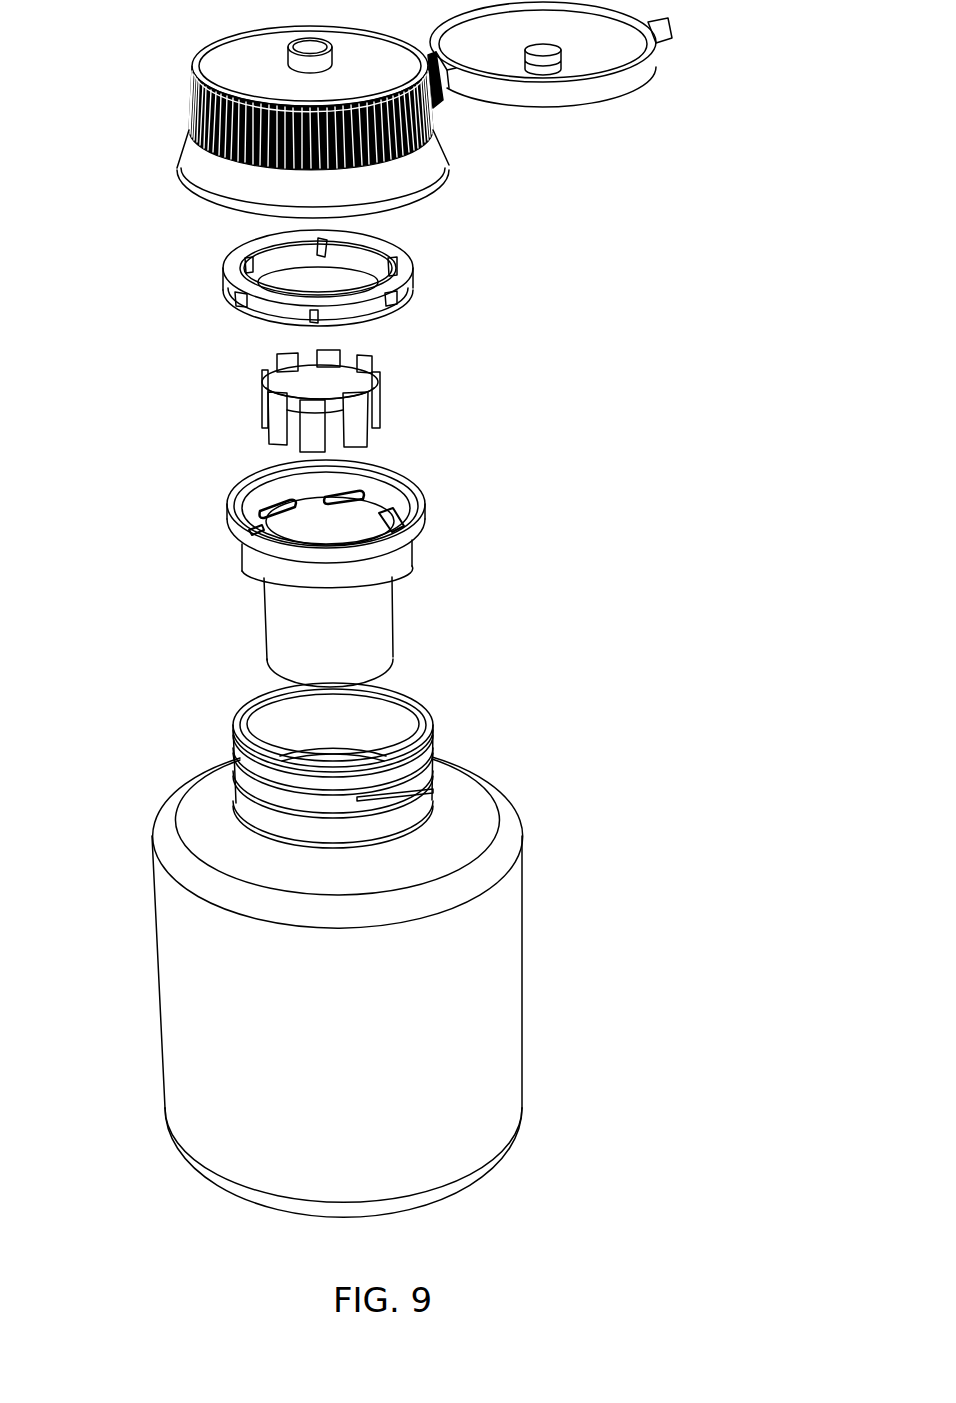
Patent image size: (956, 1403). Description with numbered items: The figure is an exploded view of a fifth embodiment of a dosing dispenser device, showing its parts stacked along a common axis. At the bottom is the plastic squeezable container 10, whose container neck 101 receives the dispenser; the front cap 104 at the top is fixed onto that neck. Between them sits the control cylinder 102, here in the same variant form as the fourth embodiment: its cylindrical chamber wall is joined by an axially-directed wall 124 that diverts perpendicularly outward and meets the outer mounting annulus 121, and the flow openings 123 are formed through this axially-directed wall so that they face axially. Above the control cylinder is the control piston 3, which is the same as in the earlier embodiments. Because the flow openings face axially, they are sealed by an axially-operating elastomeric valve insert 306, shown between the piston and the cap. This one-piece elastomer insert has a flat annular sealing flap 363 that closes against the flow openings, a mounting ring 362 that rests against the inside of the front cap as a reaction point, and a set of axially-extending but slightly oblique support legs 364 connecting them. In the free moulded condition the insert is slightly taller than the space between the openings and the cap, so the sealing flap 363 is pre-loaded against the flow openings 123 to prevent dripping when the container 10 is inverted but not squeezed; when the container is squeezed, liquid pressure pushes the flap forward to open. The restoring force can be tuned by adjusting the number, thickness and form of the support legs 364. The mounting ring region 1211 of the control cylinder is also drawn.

The front cap 104 is at (188, 129).
The elastomeric valve insert 306 is at (307, 293).
The mounting ring 362 is at (404, 259).
The sealing flap 363 is at (406, 296).
The support legs 364 is at (396, 308).
The control piston 3 is at (230, 400).
The control cylinder 102 is at (330, 559).
The outer mounting annulus 121 is at (424, 547).
The inner ring of flange 1211 is at (424, 508).
The flow openings 123 is at (363, 497).
The axially-directed wall 124 is at (283, 489).
The container neck 101 is at (430, 716).
The container 10 is at (382, 943).